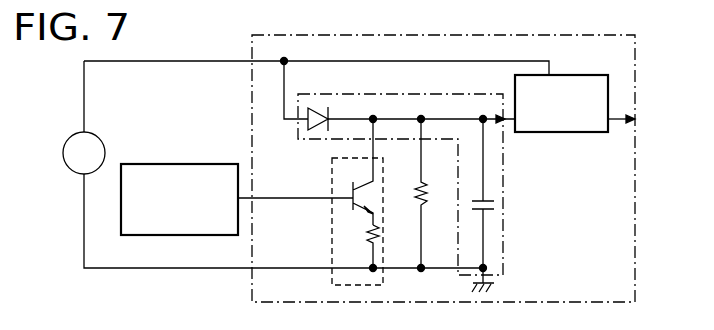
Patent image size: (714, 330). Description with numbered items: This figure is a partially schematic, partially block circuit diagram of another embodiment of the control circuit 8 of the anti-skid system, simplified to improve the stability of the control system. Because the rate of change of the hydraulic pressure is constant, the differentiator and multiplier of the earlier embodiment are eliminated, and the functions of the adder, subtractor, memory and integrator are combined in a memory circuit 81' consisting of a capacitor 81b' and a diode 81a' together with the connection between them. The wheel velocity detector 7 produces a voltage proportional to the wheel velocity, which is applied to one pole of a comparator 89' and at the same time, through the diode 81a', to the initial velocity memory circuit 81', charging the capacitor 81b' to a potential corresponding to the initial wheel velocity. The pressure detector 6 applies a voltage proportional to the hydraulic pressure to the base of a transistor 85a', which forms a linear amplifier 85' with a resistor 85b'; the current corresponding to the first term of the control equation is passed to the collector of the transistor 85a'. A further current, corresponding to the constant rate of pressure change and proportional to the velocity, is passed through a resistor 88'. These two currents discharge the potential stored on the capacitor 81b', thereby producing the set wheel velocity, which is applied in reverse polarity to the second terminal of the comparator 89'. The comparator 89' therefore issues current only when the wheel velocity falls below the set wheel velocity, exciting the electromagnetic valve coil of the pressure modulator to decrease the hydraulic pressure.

The wheel velocity detector 7 is at (68, 139).
The pressure detector 6 is at (152, 164).
The control circuit 8 is at (637, 159).
The memory circuit 81' is at (421, 184).
The diode 81a' is at (302, 139).
The capacitor 81b' is at (510, 205).
The linear amplifier 85' is at (334, 230).
The transistor 85a' is at (330, 182).
The resistor 85b' is at (403, 264).
The resistor 88' is at (434, 193).
The comparator 89' is at (561, 120).